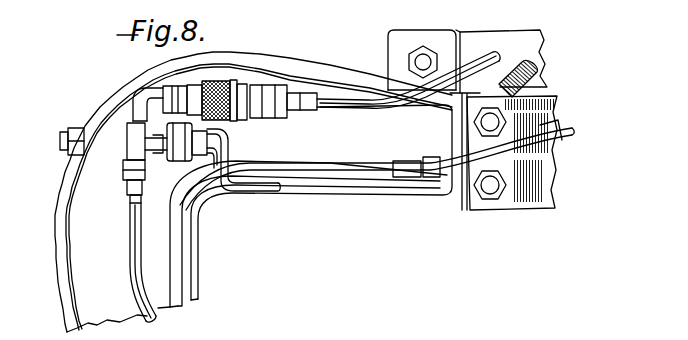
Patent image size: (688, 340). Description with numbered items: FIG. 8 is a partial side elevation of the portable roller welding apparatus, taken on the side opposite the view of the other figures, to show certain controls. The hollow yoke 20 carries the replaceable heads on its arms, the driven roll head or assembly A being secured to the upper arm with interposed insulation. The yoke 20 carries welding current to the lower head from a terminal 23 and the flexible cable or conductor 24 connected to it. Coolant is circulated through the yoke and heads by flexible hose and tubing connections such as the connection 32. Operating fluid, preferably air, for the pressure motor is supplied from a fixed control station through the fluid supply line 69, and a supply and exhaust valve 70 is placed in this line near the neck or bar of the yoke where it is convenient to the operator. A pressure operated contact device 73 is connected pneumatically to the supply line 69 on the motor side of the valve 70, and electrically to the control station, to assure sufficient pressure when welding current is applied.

The yoke 20 is at (62, 234).
The terminal 23 is at (422, 58).
The flexible cable 24 is at (527, 41).
The hose and tubing connection 32 is at (371, 173).
The fluid supply line 69 is at (131, 228).
The supply and exhaust valve 70 is at (224, 82).
The pressure operated contact device 73 is at (178, 165).
The driven roll head A is at (554, 128).